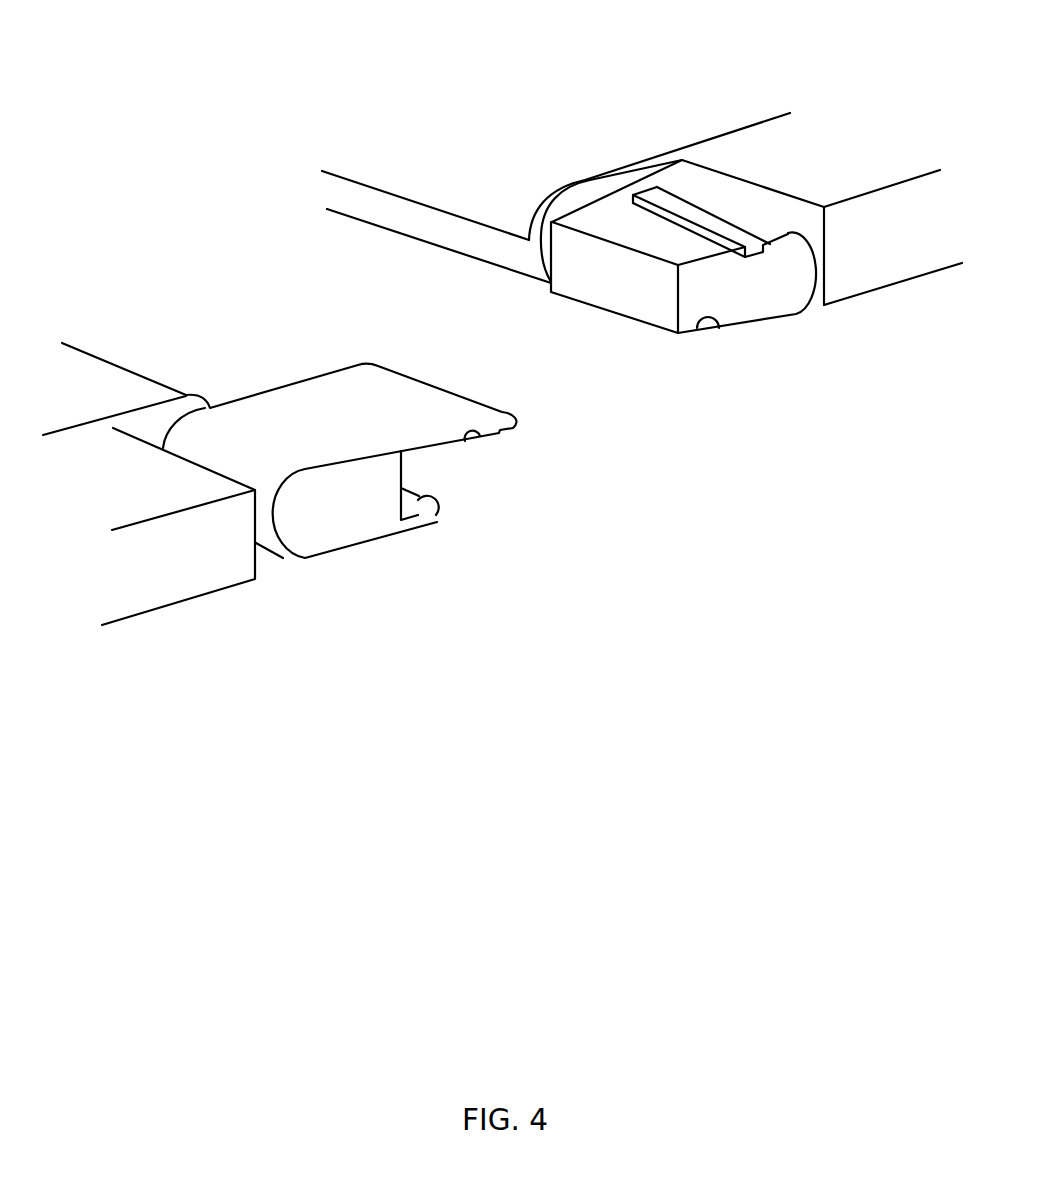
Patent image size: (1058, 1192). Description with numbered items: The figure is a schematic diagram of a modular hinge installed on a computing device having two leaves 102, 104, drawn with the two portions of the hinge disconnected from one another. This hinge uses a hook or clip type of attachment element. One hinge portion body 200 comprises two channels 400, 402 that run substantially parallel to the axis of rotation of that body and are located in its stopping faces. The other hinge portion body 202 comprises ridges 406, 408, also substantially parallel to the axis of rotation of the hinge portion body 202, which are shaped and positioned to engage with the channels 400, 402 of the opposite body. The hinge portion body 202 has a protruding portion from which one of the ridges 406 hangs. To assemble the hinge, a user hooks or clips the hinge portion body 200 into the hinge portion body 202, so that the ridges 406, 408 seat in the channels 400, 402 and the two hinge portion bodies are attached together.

The first housing portion 102 is at (103, 380).
The second housing portion 104 is at (544, 135).
The hinge portion body 200 is at (773, 302).
The hinge portion body 202 is at (371, 491).
The channel 400 is at (753, 247).
The channel 402 is at (707, 325).
The ridge 406 is at (494, 433).
The ridge 408 is at (428, 513).